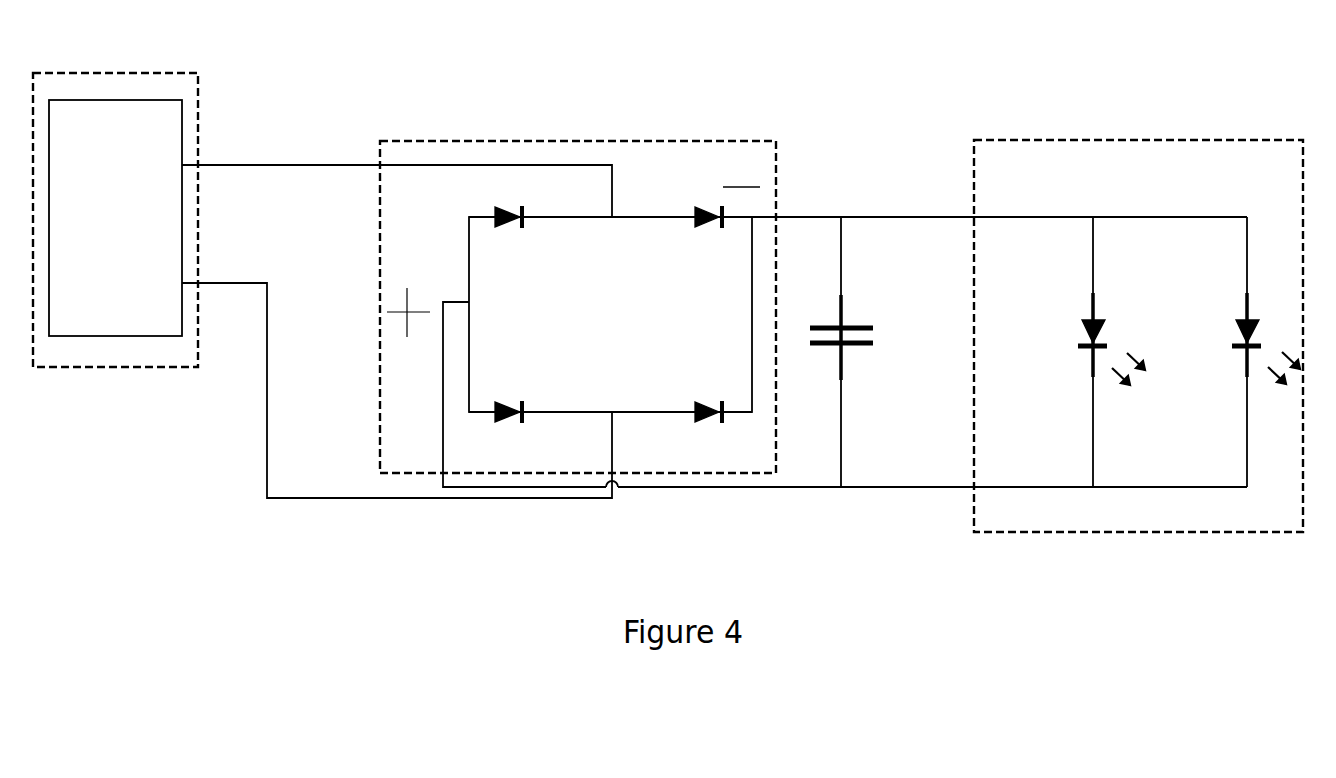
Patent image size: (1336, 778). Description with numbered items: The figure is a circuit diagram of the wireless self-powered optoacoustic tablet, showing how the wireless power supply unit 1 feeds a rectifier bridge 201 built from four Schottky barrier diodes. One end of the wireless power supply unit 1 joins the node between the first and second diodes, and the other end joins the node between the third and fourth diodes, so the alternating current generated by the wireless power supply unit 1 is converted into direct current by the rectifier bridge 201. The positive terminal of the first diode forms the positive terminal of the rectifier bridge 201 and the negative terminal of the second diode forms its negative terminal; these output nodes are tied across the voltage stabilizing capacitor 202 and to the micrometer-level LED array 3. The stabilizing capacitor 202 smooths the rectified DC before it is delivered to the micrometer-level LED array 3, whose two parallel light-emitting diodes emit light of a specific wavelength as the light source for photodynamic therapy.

The wireless power supply unit 1 is at (115, 189).
The rectifier bridge 201 is at (578, 280).
The stabilizing capacitor 202 is at (876, 352).
The micrometer-scale LED array 3 is at (1138, 313).